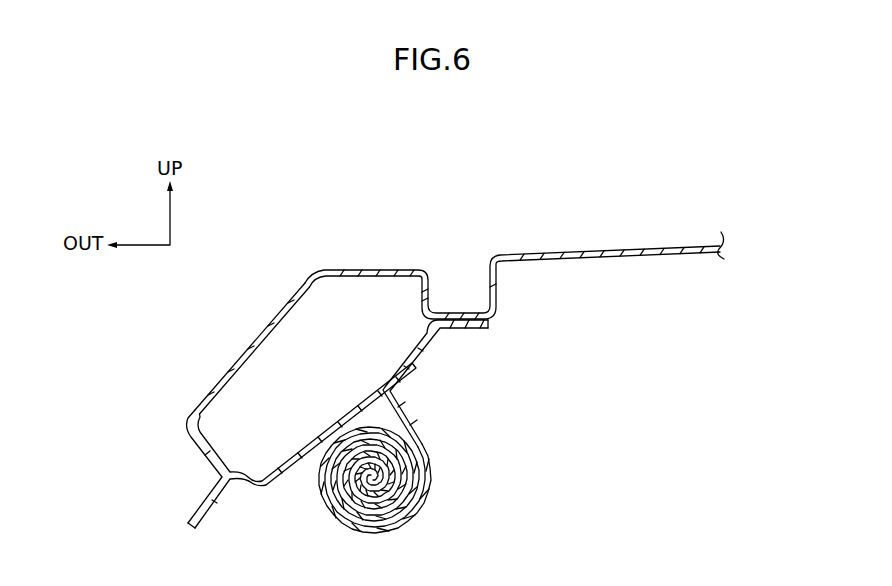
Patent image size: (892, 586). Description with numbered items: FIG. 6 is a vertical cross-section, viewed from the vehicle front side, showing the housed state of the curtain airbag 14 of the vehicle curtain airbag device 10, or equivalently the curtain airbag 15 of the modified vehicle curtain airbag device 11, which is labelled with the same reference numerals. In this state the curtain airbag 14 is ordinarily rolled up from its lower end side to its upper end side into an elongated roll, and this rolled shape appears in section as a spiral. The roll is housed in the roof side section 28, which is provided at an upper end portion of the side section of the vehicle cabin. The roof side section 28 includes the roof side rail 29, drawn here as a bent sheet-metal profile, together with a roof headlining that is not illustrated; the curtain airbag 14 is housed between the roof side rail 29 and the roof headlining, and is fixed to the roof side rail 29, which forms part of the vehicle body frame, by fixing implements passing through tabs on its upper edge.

The vehicle curtain airbag device 10 is at (453, 426).
The vehicle curtain airbag device 11 is at (439, 426).
The curtain airbag 14 is at (439, 480).
The curtain airbag 15 is at (436, 488).
The roof side section 28 is at (455, 351).
The roof side rail 29 is at (274, 317).